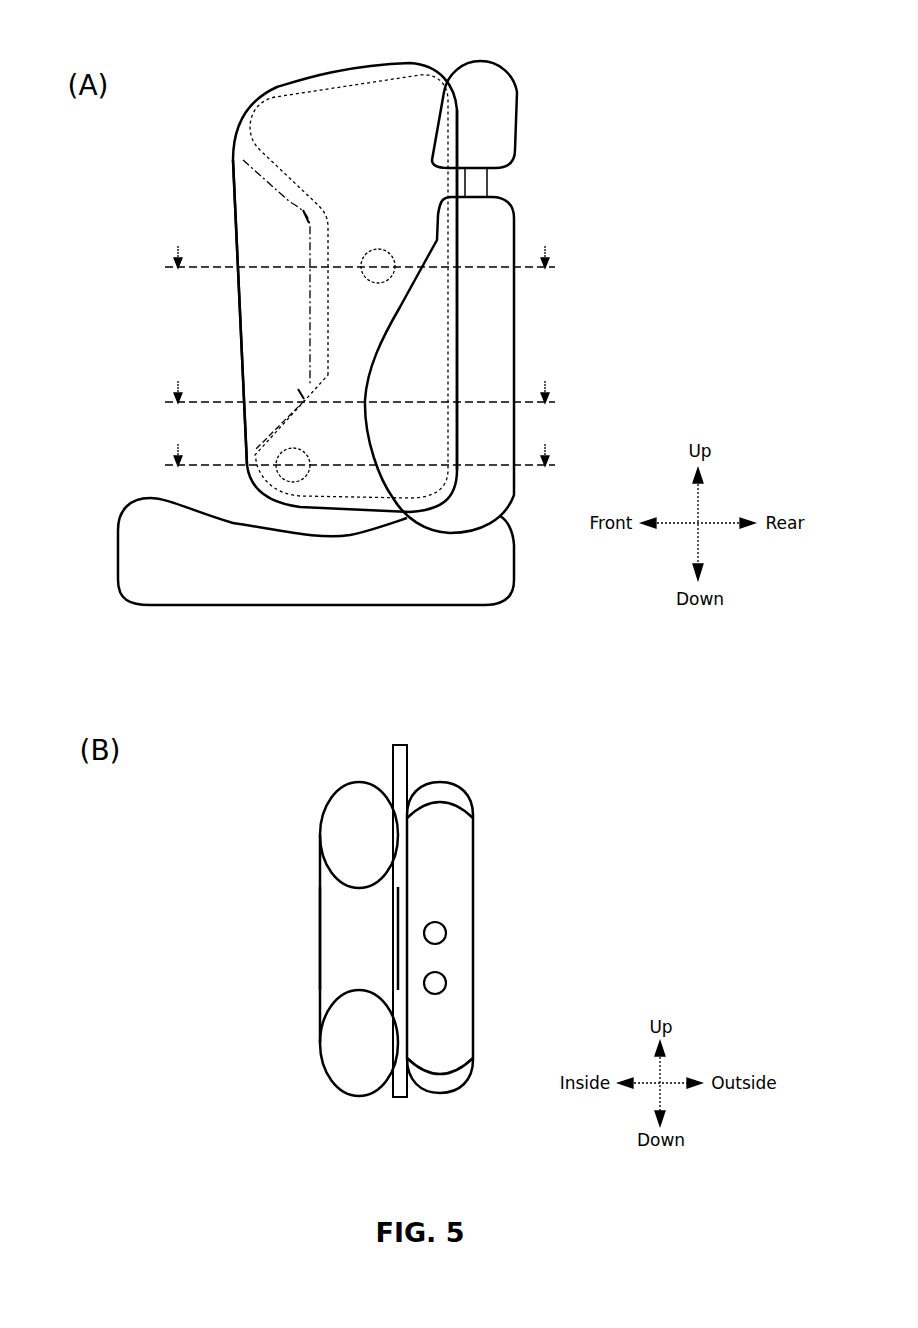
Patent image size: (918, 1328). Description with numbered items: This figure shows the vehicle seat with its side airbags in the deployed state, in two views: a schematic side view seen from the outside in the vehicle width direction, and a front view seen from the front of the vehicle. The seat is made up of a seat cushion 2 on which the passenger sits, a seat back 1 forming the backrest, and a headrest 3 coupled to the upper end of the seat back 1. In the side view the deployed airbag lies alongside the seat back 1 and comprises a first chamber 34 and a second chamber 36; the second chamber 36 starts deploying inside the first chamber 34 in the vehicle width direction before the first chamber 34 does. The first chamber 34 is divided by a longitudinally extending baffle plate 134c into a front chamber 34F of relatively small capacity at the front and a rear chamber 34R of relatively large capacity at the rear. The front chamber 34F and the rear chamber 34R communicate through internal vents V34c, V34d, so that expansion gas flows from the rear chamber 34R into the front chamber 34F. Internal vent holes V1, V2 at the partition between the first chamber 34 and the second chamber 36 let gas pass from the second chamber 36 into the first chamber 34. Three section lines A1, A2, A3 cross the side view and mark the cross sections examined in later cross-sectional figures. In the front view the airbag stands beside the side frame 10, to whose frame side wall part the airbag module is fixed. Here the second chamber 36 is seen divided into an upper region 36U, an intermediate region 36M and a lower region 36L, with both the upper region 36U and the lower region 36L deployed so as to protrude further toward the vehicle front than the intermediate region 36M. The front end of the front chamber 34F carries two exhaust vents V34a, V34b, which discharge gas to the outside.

The seat back 1 is at (515, 222).
The seat cushion 2 is at (305, 598).
The headrest 3 is at (515, 103).
The side frame 10 is at (407, 762).
The first chamber 34 is at (369, 64).
The front chamber 34F is at (233, 298).
The rear chamber 34R is at (457, 337).
The second chamber 36 is at (252, 115).
The upper region 36U is at (337, 830).
The intermediate region 36M is at (327, 950).
The lower region 36L is at (333, 1055).
The baffle plate 134c is at (310, 243).
The internal vent hole V1 is at (305, 480).
The internal vent hole V2 is at (370, 250).
The exhaust vent V34a is at (447, 932).
The exhaust vent V34b is at (447, 982).
The internal vent V34c is at (296, 206).
The internal vent V34d is at (293, 396).
The section line A1- A1 is at (360, 460).
The section line A2- A2 is at (360, 397).
The section line A3- A3 is at (360, 262).